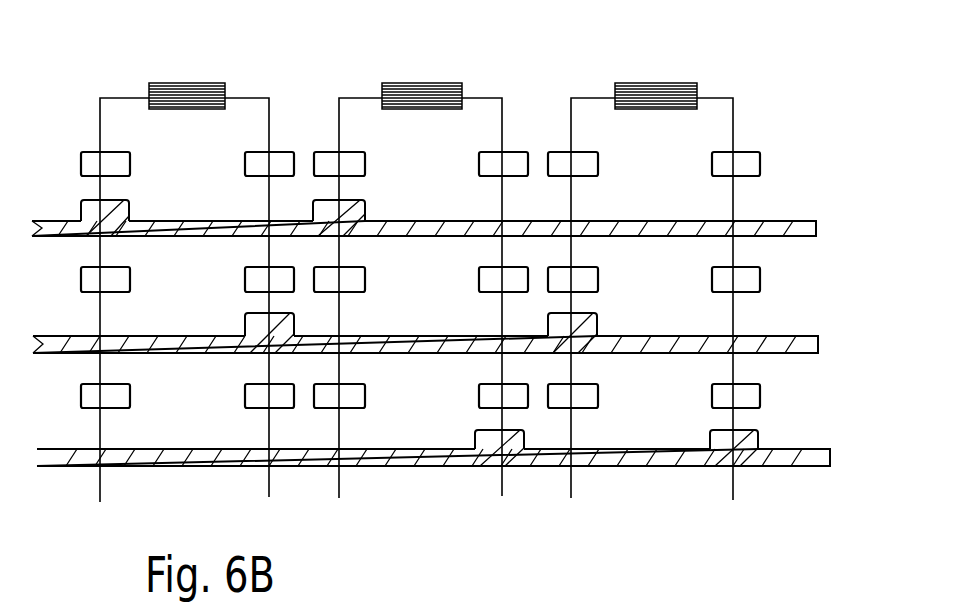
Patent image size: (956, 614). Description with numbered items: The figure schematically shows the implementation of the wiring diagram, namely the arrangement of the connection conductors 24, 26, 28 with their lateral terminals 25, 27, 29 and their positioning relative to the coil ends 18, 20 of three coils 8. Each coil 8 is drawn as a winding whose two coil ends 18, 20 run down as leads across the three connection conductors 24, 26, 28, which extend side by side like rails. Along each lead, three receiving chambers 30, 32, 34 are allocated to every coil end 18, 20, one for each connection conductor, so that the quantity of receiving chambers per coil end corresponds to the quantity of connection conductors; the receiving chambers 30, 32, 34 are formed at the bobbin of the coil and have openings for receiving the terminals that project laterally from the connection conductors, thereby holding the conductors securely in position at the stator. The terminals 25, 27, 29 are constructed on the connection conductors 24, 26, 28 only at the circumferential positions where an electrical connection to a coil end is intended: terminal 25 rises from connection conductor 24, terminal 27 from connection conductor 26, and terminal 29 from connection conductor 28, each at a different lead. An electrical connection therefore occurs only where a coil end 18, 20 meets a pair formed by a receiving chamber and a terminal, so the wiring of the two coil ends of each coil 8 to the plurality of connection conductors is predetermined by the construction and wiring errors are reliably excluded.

The coil 8 is at (190, 75).
The coil end 18 is at (136, 90).
The coil end 20 is at (252, 88).
The connection conductor 24 is at (782, 218).
The terminal 25 is at (132, 208).
The connection conductor 26 is at (777, 328).
The terminal 27 is at (242, 322).
The connection conductor 28 is at (783, 448).
The terminal 29 is at (473, 440).
The receiving chamber 30 is at (75, 163).
The receiving chamber 32 is at (75, 282).
The receiving chamber 34 is at (75, 398).